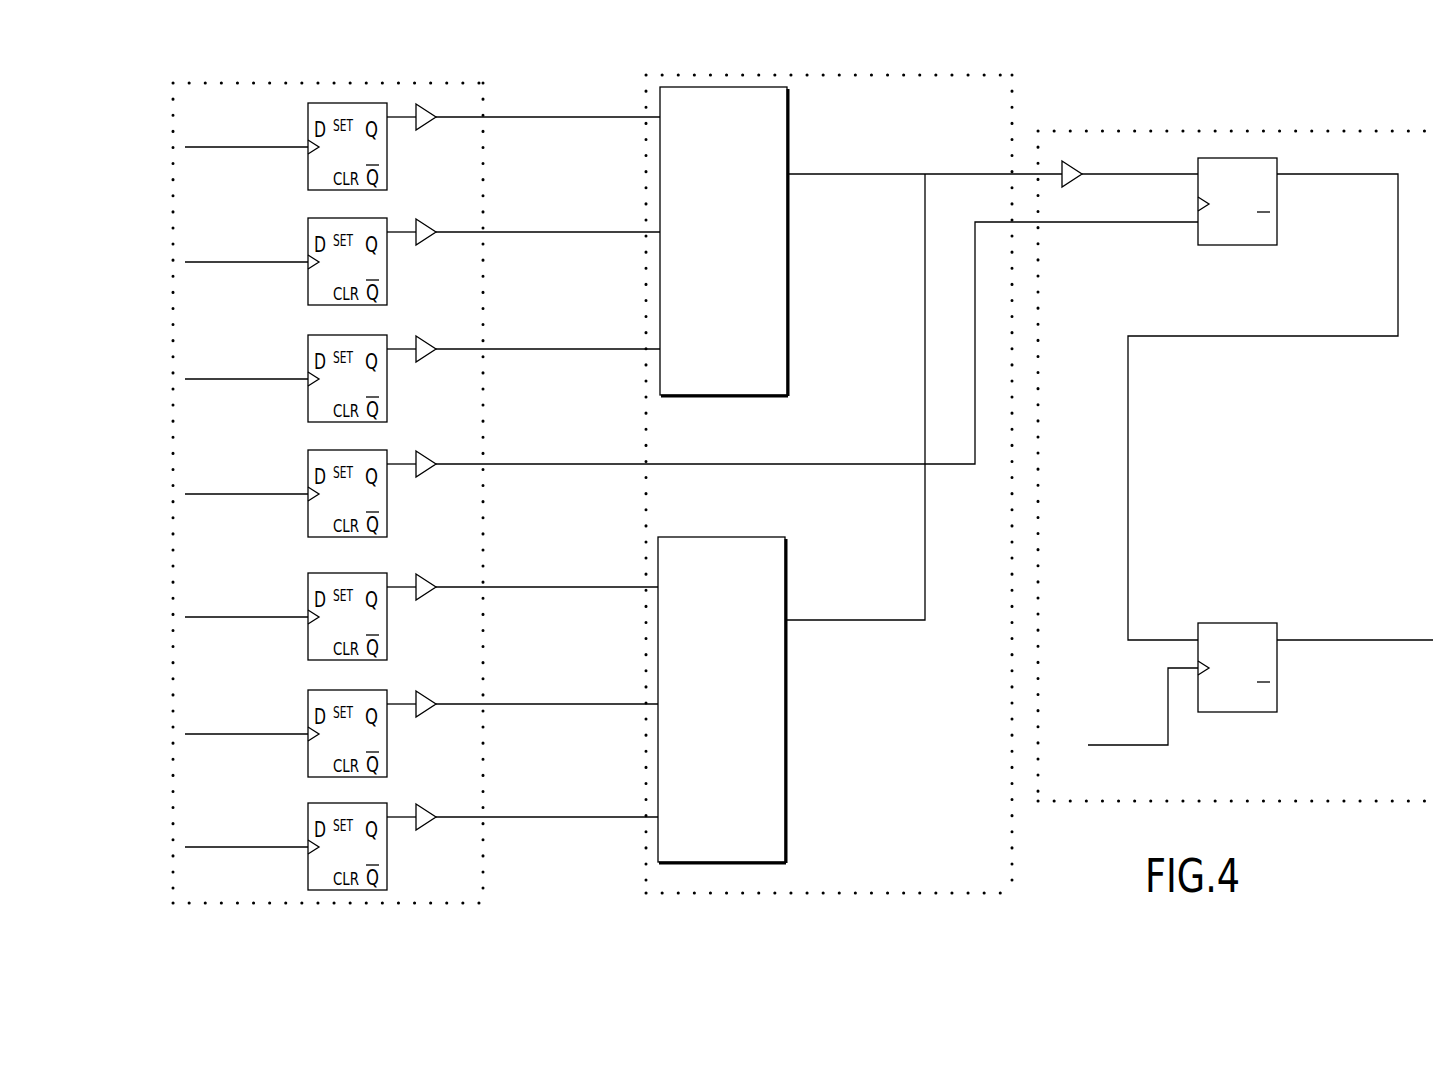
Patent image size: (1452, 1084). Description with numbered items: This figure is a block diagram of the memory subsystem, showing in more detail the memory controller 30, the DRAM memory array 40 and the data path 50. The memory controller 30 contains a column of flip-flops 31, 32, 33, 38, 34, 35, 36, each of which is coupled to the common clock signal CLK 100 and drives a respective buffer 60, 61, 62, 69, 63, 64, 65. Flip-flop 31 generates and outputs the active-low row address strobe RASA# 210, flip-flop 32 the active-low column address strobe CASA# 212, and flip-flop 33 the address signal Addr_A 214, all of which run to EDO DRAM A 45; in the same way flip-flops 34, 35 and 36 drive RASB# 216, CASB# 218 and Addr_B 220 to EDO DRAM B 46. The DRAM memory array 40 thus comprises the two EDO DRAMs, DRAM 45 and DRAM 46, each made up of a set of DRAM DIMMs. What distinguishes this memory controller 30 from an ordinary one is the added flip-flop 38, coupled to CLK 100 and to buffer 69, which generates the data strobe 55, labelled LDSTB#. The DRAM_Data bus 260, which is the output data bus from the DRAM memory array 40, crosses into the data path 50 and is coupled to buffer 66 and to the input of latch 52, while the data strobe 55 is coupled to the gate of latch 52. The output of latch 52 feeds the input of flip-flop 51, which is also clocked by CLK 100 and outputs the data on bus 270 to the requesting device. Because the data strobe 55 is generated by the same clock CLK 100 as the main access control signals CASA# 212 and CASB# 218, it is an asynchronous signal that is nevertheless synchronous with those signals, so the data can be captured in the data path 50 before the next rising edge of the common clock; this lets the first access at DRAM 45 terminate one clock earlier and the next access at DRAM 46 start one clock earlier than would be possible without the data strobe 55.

The memory controller 30 is at (483, 88).
The flip-flop 31 is at (308, 132).
The flip-flop 32 is at (308, 247).
The flip-flop 33 is at (308, 364).
The flip-flop 38 is at (308, 479).
The flip-flop 34 is at (308, 602).
The flip-flop 35 is at (308, 719).
The flip-flop 36 is at (308, 832).
The buffer 60 is at (421, 130).
The buffer 61 is at (421, 245).
The buffer 62 is at (421, 362).
The buffer 69 is at (421, 477).
The buffer 63 is at (421, 600).
The buffer 64 is at (421, 717).
The buffer 65 is at (421, 830).
The CLK 100 is at (200, 147).
The RASA# 210 is at (531, 119).
The CASA# 212 is at (531, 234).
The Addr_A 214 is at (531, 351).
The data strobe 55 is at (531, 466).
The RASB# 216 is at (531, 589).
The CASB# 218 is at (531, 706).
The Addr_B 220 is at (531, 819).
The DRAM memory array 40 is at (1010, 825).
The EDO DRAM A 45 is at (787, 323).
The EDO DRAM B 46 is at (785, 707).
The DRAM_Data bus 260 is at (1023, 174).
The data path 50 is at (1268, 131).
The buffer 66 is at (1068, 186).
The latch 52 is at (1277, 222).
The flip-flop 51 is at (1277, 692).
The bus 270 is at (1413, 642).